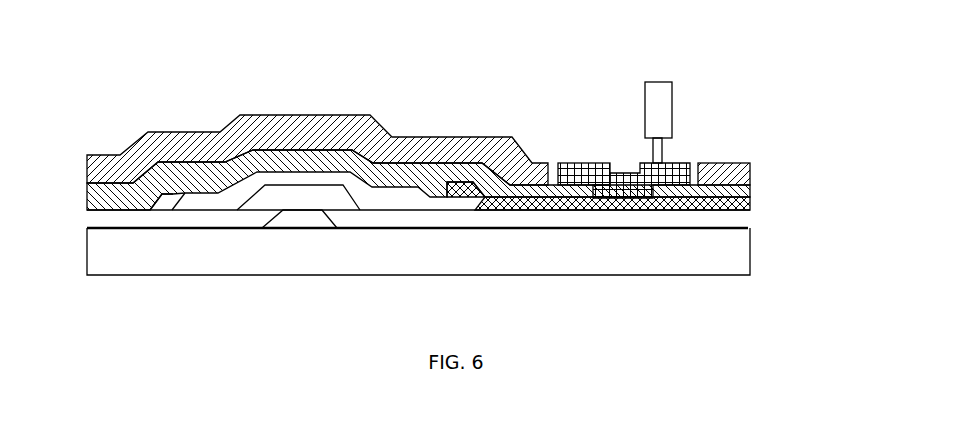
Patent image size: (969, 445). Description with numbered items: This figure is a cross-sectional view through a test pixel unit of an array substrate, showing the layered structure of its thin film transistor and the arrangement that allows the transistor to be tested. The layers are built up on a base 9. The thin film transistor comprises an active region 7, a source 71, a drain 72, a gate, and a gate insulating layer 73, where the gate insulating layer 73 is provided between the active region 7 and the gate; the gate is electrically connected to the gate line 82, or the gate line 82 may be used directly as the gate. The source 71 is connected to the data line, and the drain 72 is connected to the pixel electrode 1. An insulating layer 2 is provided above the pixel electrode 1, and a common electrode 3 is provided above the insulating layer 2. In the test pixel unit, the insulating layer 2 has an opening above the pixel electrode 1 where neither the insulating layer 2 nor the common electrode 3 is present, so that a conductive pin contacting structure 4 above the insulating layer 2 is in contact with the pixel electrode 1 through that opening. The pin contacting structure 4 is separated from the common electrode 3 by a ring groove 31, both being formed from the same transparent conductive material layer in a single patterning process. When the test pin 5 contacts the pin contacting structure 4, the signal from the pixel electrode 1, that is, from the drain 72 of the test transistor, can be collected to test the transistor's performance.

The pixel electrode 1 is at (752, 213).
The insulating layer 2 is at (752, 197).
The common electrode 3 is at (752, 177).
The ring groove 31 is at (553, 163).
The pin contacting structure 4 is at (594, 170).
The test pin 5 is at (666, 106).
The active region 7 is at (370, 200).
The source 71 is at (160, 207).
The drain 72 is at (445, 205).
The gate insulating layer 73 is at (750, 230).
The gate line 82 is at (300, 220).
The base 9 is at (748, 262).